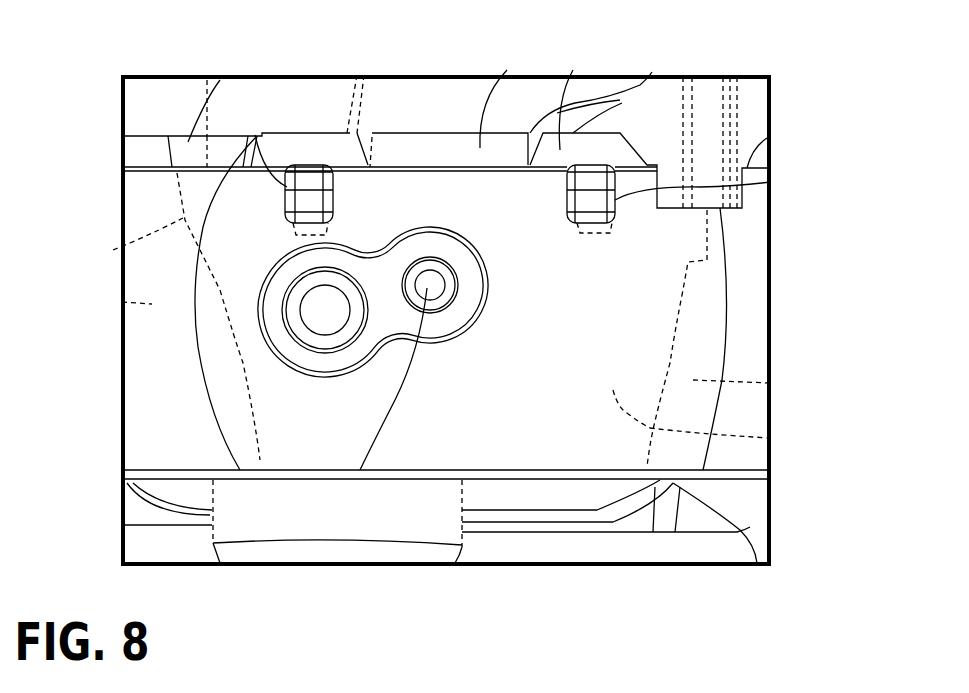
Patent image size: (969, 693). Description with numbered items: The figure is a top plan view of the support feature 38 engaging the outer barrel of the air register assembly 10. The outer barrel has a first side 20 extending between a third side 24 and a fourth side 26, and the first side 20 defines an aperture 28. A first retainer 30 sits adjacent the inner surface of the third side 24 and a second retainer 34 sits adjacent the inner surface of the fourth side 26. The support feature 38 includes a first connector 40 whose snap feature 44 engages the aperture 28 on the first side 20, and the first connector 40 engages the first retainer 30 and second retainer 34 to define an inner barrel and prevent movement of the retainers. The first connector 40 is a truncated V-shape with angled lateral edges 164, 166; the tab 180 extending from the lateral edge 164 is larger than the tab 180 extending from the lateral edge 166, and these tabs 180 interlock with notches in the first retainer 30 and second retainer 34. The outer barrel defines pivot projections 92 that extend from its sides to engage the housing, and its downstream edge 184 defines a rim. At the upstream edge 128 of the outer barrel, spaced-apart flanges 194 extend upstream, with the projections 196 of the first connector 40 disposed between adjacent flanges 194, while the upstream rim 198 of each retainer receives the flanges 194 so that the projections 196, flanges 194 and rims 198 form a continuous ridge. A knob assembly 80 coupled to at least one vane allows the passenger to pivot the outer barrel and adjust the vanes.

The air register assembly 10 is at (789, 46).
The first side 20 is at (220, 417).
The third side 24 is at (145, 415).
The fourth side 26 is at (739, 373).
The aperture 28 is at (255, 133).
The first retainer 30 is at (122, 302).
The second retainer 34 is at (770, 383).
The support feature 38 is at (334, 96).
The first connector 40 is at (770, 438).
The snap feature 44 is at (307, 187).
The knob assembly 80 is at (397, 517).
The pivot projection 92 is at (328, 320).
The upstream edge 128 is at (592, 187).
The lateral edge 164 is at (185, 347).
The lateral edge 166 is at (697, 320).
The tab 180 is at (130, 243).
The downstream edge 184 is at (560, 482).
The flange 194 is at (332, 148).
The projection 196 is at (188, 145).
The upstream rim 198 is at (147, 152).